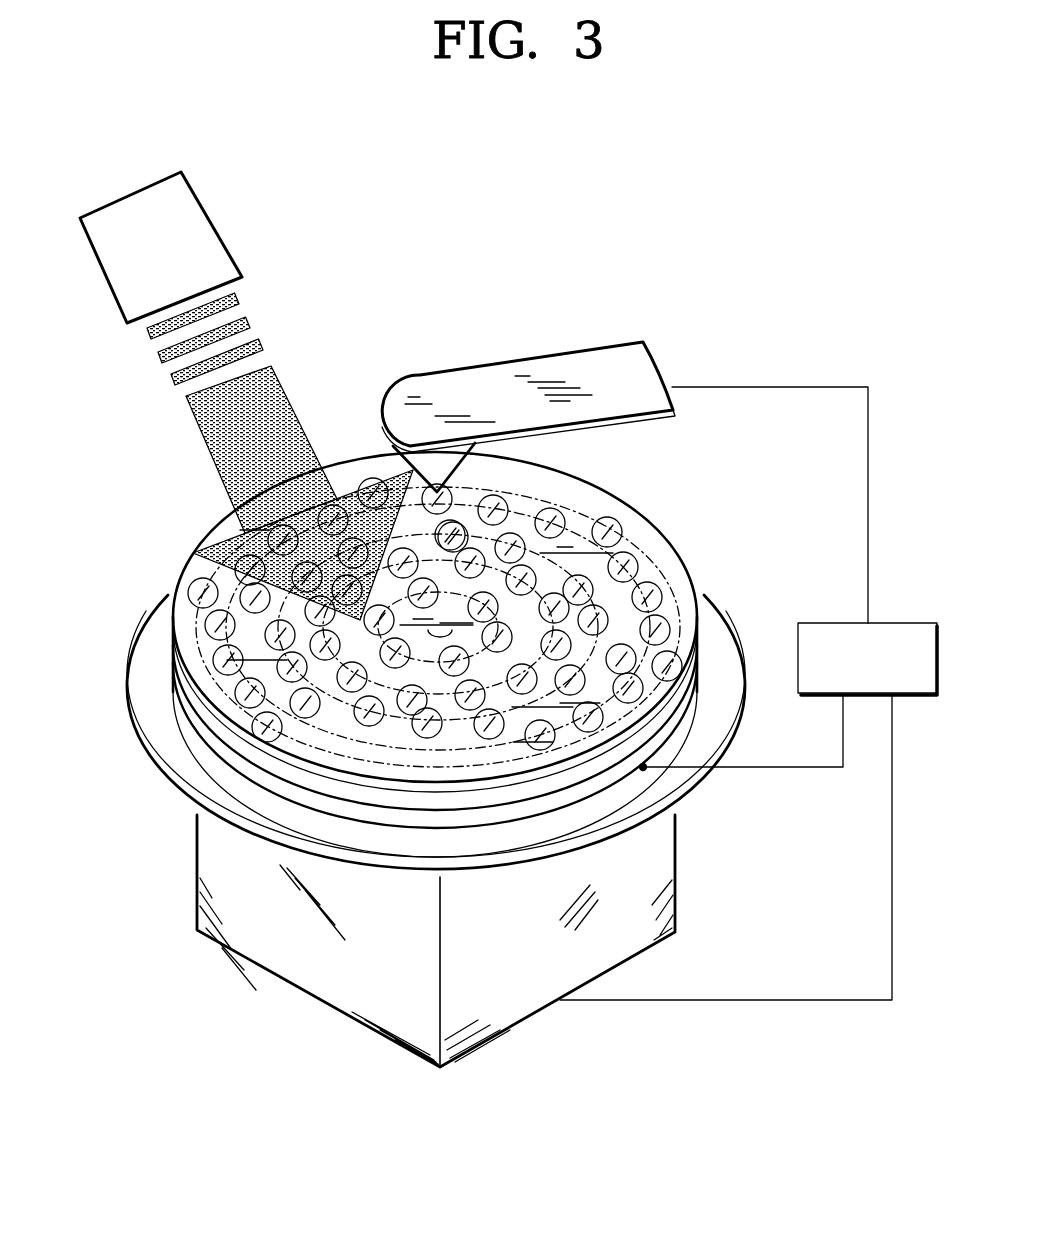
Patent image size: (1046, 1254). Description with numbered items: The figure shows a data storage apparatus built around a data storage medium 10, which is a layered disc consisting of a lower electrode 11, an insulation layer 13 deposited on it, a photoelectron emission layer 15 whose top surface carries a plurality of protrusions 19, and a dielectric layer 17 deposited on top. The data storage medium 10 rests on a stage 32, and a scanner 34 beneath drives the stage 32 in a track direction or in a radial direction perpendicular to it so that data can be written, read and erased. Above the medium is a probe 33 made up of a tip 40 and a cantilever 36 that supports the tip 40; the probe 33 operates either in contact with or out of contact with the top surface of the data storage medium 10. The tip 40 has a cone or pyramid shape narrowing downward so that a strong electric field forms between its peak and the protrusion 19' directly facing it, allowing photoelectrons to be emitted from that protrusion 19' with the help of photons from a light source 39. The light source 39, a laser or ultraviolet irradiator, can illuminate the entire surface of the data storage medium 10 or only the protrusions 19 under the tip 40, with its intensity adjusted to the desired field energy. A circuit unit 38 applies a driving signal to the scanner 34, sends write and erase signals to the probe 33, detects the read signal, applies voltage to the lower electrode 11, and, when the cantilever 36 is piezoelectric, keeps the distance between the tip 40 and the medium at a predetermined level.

The data storage medium 10 is at (180, 490).
The lower electrode 11 is at (223, 762).
The insulation layer 13 is at (203, 732).
The photoelectron emission layer 15 is at (202, 707).
The dielectric layer 17 is at (657, 530).
The protrusions 19 is at (435, 601).
The protrusion facing the tip 19' is at (386, 467).
The stage 32 is at (140, 672).
The probe 33 is at (399, 352).
The scanner 34 is at (676, 873).
The cantilever 36 is at (494, 378).
The circuit unit 38 is at (900, 623).
The light source 39 is at (213, 222).
The tip 40 is at (392, 446).